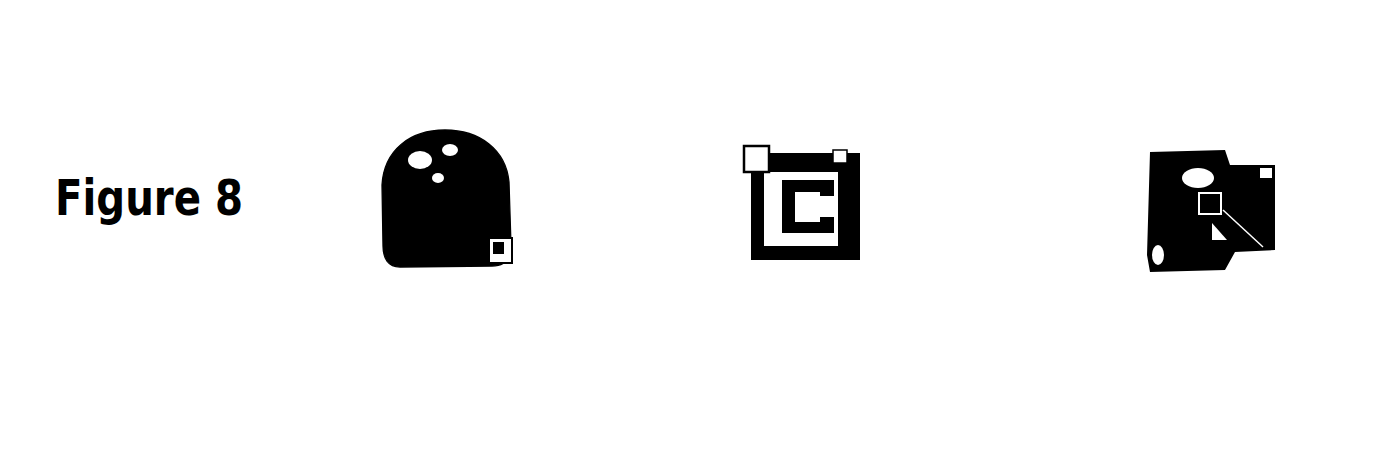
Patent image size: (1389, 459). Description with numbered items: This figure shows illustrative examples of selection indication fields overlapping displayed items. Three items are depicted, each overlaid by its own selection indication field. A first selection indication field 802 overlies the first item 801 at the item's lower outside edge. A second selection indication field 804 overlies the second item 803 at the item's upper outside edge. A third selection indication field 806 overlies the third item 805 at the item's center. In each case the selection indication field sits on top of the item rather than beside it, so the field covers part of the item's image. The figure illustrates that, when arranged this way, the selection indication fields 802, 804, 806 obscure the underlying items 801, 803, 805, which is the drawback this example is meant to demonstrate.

The item 801 is at (512, 170).
The selection indication field 802 is at (512, 263).
The item 803 is at (850, 143).
The selection indication field 804 is at (750, 142).
The item 805 is at (1192, 143).
The selection indication field 806 is at (1265, 243).